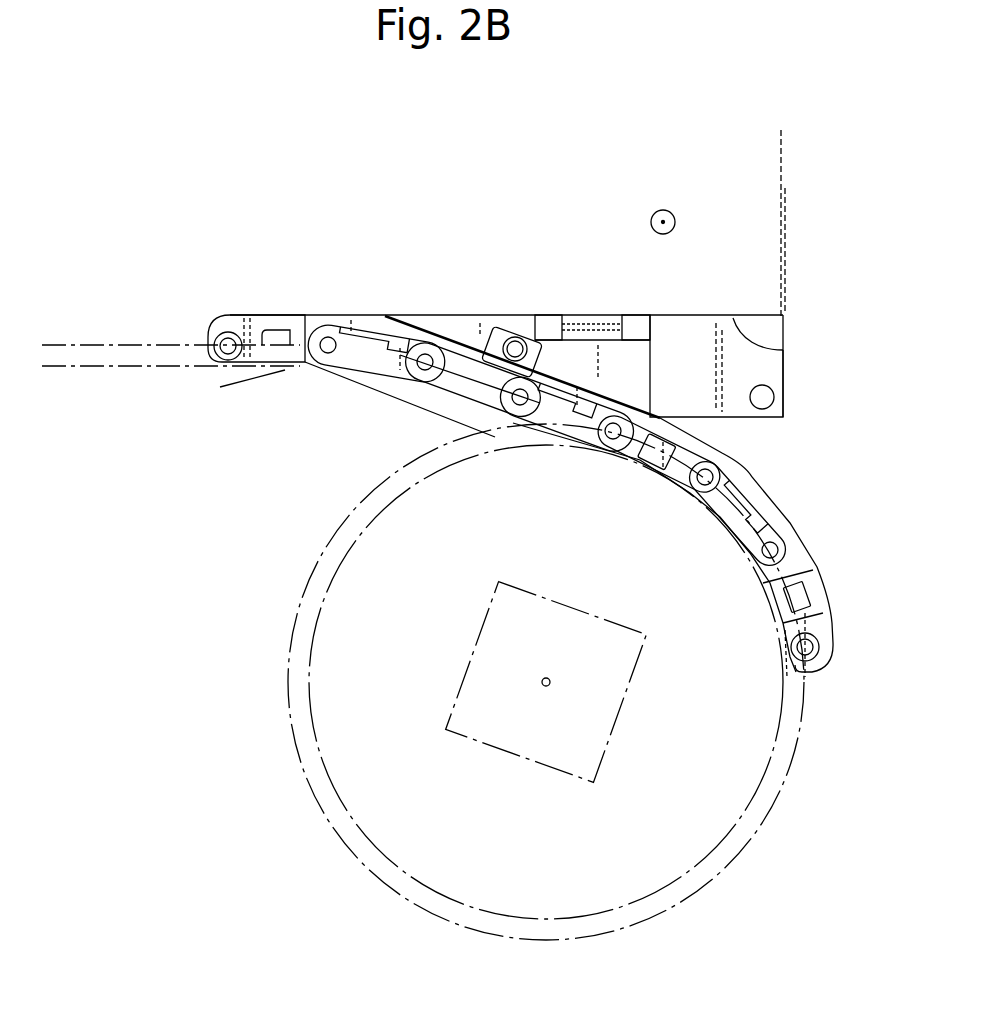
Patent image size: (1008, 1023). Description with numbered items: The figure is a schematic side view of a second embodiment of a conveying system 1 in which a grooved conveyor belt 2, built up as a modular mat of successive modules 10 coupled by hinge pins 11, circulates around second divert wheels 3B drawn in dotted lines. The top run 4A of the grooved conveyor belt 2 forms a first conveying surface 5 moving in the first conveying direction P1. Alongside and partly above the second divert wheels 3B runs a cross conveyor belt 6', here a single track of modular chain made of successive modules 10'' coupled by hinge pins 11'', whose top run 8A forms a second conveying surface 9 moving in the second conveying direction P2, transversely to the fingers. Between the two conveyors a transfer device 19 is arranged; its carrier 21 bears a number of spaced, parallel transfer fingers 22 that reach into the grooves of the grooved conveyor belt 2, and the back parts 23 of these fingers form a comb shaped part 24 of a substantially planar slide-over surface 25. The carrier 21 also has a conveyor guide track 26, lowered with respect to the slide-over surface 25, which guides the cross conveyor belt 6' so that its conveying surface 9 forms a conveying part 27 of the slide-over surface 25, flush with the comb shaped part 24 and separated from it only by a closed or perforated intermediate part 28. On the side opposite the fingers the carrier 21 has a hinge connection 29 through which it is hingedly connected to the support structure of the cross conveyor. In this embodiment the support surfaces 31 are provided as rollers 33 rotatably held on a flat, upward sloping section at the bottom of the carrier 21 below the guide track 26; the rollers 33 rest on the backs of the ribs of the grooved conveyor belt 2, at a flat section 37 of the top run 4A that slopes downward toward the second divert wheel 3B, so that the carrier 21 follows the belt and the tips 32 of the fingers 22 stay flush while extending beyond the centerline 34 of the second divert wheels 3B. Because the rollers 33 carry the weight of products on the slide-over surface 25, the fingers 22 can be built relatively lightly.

The conveying system 1 is at (262, 495).
The grooved conveyor belt 2 is at (752, 498).
The second divert wheels 3B is at (432, 604).
The top run 4A is at (219, 332).
The first conveying surface 5 is at (268, 307).
The cross conveyor belt 6' is at (743, 291).
The top run 8A is at (704, 308).
The second conveying surface 9 is at (489, 312).
The modules 10 is at (281, 386).
The modules 10'' is at (578, 281).
The hinge pins 11 is at (376, 392).
The hinge pins 11'' is at (621, 306).
The transfer device 19 is at (803, 327).
The carrier 21 is at (783, 378).
The transfer fingers 22 is at (370, 312).
The back parts 23 is at (378, 312).
The comb shaped part 24 is at (388, 383).
The slide-over surface 25 is at (781, 130).
The conveyor guide track 26 is at (783, 350).
The conveying part 27 is at (785, 188).
The intermediate part 28 is at (400, 312).
The hinge connection 29 is at (763, 404).
The support surfaces 31 is at (473, 423).
The rollers 33 is at (488, 405).
The tips 32 is at (316, 308).
The centerline 34 is at (552, 682).
The flat section 37 is at (495, 405).
The first conveying direction P1 is at (172, 282).
The second conveying direction P2 is at (681, 218).